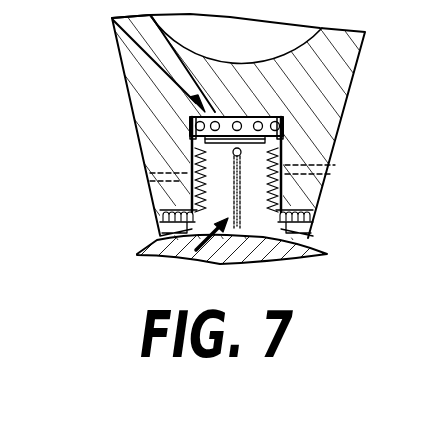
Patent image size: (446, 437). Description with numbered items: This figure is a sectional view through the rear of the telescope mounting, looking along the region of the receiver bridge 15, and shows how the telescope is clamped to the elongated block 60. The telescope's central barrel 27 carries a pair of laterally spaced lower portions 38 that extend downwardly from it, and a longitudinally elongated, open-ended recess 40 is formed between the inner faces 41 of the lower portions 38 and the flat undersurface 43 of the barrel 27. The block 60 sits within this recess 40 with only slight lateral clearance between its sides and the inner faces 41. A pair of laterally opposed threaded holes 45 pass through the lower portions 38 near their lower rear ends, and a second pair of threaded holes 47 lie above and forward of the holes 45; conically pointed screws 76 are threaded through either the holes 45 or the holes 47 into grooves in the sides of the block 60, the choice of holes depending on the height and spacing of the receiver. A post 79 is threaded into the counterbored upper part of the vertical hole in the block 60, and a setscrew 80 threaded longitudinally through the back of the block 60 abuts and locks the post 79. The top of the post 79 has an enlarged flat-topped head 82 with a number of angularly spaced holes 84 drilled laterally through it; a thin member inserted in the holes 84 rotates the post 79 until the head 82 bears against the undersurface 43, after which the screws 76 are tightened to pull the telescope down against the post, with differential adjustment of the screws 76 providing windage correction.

The receiver bridge 15 is at (0, 206).
The central barrel 27 is at (117, 42).
The post 79 is at (190, 100).
The enlarged flat-topped head 82 is at (185, 110).
The angularly spaced holes 84 is at (278, 119).
The flat undersurface 43 is at (288, 120).
The open-ended recess 40 is at (285, 136).
The setscrew 80 is at (241, 151).
The inner faces 41 is at (190, 118).
The lower portions 38 is at (192, 137).
The threaded holes 47 is at (150, 177).
The threaded holes 45 is at (160, 214).
The conically pointed screws 76 is at (152, 247).
The elongated block 60 is at (197, 252).